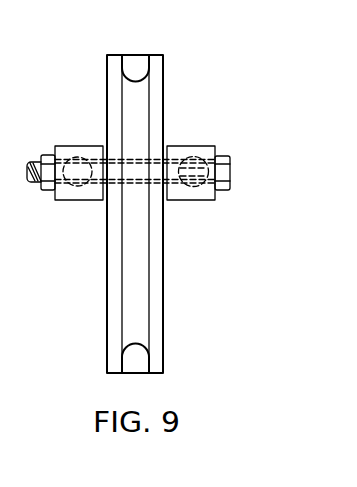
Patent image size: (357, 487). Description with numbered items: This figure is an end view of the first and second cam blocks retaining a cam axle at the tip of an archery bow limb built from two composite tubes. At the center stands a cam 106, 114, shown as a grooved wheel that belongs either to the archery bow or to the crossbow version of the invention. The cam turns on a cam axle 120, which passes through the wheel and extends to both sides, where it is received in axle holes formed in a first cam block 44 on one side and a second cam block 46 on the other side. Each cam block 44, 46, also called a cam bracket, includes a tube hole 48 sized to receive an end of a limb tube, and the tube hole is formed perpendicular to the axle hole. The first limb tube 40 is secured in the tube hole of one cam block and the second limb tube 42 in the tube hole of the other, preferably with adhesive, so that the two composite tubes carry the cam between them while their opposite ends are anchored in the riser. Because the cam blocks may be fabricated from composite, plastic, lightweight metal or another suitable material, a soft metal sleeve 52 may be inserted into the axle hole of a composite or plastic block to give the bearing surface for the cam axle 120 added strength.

The first limb tube 40 is at (198, 201).
The second limb tube 42 is at (90, 144).
The first cam block 44 is at (200, 146).
The second cam block 46 is at (67, 201).
The tube hole 48 is at (70, 147).
The soft metal sleeve 52 is at (175, 201).
The cam 106 is at (211, 201).
The cam 114 is at (163, 319).
The cam axle 120 is at (230, 174).